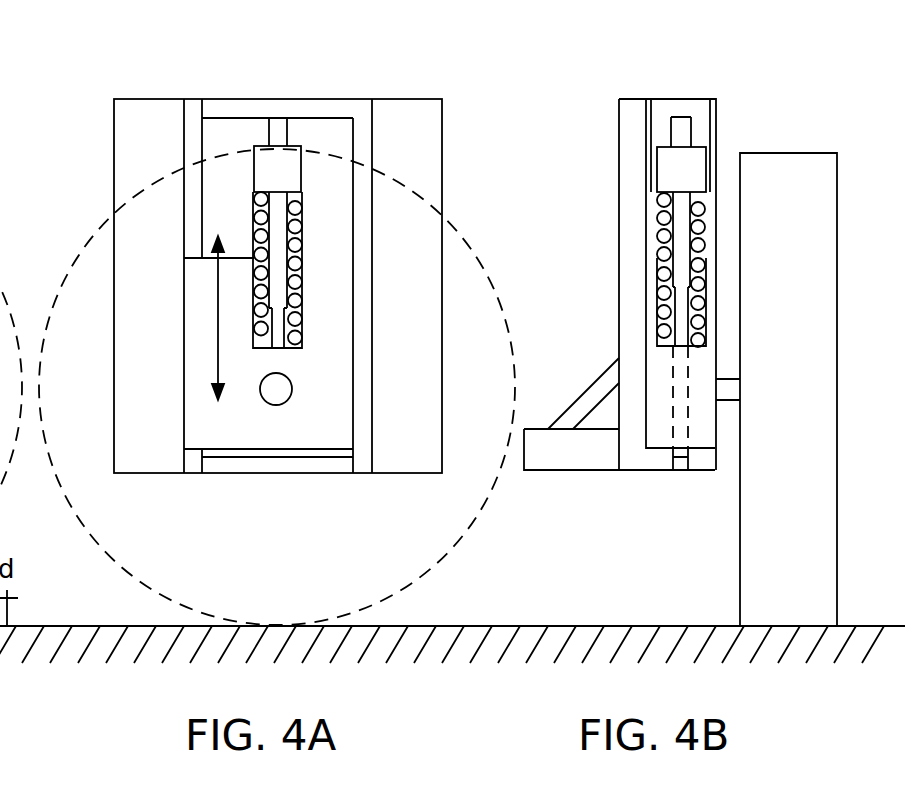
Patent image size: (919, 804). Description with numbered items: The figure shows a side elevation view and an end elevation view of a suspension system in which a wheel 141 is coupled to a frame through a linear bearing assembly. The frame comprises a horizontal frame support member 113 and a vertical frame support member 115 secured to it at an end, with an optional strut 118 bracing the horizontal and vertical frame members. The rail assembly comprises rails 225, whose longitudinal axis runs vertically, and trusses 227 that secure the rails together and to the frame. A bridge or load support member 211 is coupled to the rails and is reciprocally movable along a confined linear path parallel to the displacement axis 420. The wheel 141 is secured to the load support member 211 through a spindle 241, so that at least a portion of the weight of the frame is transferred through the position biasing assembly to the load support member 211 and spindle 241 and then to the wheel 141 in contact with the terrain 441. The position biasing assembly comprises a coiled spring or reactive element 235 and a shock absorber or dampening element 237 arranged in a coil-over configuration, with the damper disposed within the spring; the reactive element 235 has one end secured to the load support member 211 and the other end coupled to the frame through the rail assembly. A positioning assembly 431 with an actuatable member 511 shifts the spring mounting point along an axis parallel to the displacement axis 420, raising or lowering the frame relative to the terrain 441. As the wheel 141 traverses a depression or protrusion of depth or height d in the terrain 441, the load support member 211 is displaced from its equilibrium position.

In FIG. 4B, the horizontal frame support member 113 is at (560, 472).
In FIG. 4A, the vertical frame support member 115 is at (428, 120).
In FIG. 4B, the strut 118 is at (583, 407).
In FIG. 4B, the wheel 141 is at (838, 470).
In FIG. 4A, the load support member 211 is at (336, 340).
In FIG. 4B, the load support member 211 is at (698, 417).
In FIG. 4A, the rail 225 is at (192, 105).
In FIG. 4A, the truss 227 is at (330, 104).
In FIG. 4B, the truss 227 is at (684, 105).
In FIG. 4A, the reactive element 235 is at (301, 257).
In FIG. 4B, the reactive element 235 is at (704, 237).
In FIG. 4A, the dampening element 237 is at (275, 234).
In FIG. 4B, the dampening element 237 is at (703, 293).
In FIG. 4B, the spindle 241 is at (723, 380).
In FIG. 4A, the displacement axis 420 is at (217, 288).
In FIG. 4A, the positioning assembly 431 is at (260, 170).
In FIG. 4B, the positioning assembly 431 is at (706, 162).
In FIG. 4B, the terrain 441 is at (840, 624).
In FIG. 4A, the actuatable member 511 is at (279, 130).
In FIG. 4B, the actuatable member 511 is at (680, 128).